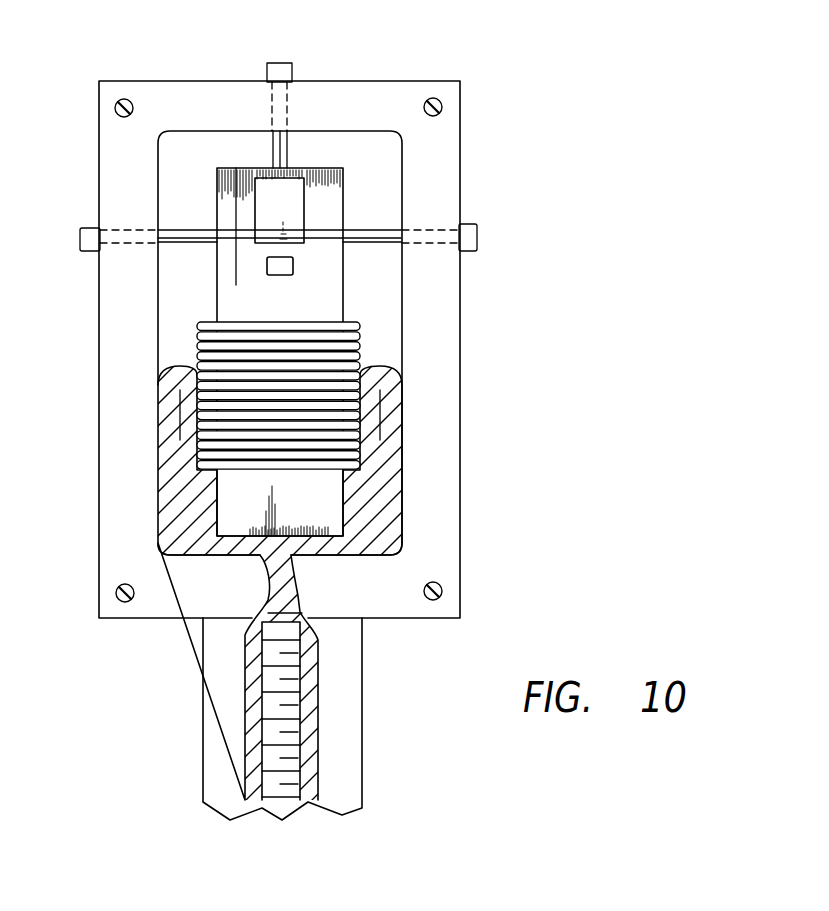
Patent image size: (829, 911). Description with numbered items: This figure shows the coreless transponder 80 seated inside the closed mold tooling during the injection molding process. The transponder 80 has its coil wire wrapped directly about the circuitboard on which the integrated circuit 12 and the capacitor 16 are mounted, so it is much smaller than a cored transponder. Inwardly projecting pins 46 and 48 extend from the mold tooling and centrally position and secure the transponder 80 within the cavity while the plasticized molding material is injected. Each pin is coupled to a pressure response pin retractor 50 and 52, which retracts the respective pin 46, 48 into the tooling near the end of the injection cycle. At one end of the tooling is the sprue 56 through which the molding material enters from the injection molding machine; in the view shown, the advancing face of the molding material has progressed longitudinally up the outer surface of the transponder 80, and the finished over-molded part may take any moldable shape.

The integrated circuit 12 is at (286, 200).
The capacitor 16 is at (294, 265).
The pin 46 is at (423, 230).
The pin 48 is at (273, 147).
The pressure response pin retractor 50 is at (478, 236).
The pressure response pin retractor 52 is at (287, 62).
The sprue 56 is at (298, 586).
The transponder 80 is at (360, 292).